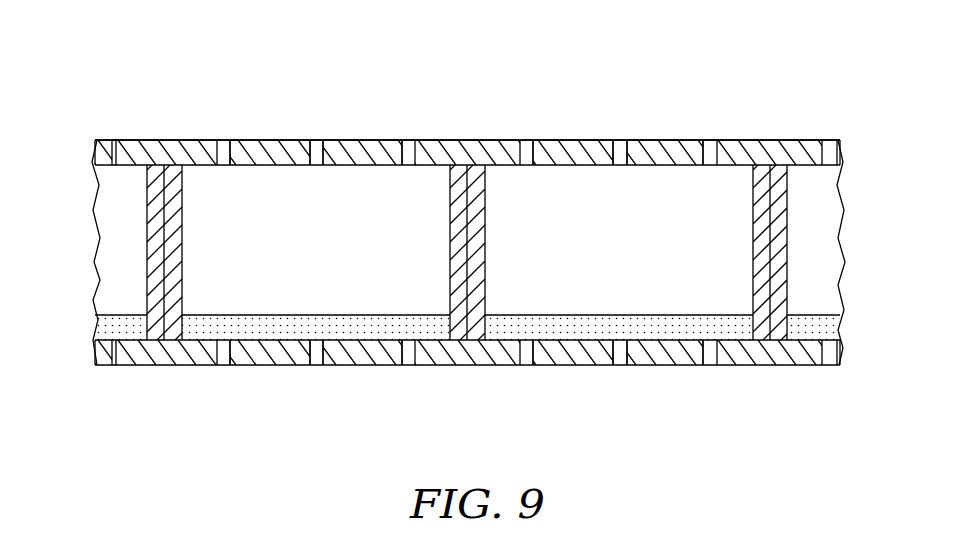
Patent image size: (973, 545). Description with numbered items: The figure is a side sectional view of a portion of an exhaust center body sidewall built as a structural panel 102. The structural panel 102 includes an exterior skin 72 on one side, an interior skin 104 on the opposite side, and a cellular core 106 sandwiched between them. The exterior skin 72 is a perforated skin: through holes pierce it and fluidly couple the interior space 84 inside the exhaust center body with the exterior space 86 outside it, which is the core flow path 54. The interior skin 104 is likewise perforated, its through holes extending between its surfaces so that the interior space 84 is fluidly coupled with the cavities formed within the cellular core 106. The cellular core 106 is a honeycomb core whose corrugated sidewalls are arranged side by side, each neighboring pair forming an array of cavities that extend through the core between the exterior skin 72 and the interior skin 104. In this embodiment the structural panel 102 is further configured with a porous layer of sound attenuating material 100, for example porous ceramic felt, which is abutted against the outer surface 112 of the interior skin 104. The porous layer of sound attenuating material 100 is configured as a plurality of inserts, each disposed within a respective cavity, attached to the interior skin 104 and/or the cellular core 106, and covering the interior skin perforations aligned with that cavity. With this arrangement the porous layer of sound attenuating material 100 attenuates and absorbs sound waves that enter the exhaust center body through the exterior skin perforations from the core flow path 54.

The porous layer of sound attenuating material 100 is at (80, 329).
The structural panel 102 is at (65, 112).
The interior skin 104 is at (858, 357).
The cellular core 106 is at (852, 165).
The core flow path 54 is at (467, 102).
The exterior space 86 is at (508, 68).
The exterior skin 72 is at (860, 140).
The interior space 84 is at (498, 435).
The outer surface 112 is at (127, 338).